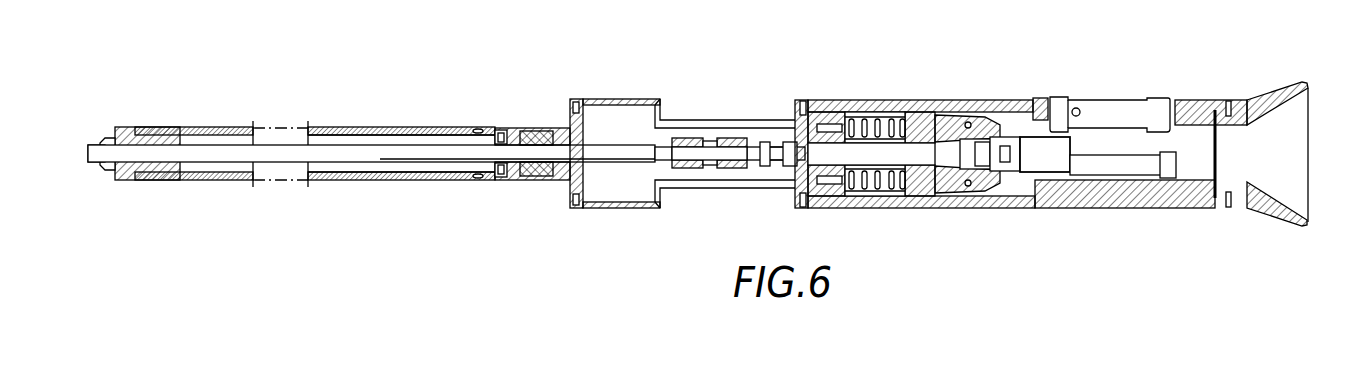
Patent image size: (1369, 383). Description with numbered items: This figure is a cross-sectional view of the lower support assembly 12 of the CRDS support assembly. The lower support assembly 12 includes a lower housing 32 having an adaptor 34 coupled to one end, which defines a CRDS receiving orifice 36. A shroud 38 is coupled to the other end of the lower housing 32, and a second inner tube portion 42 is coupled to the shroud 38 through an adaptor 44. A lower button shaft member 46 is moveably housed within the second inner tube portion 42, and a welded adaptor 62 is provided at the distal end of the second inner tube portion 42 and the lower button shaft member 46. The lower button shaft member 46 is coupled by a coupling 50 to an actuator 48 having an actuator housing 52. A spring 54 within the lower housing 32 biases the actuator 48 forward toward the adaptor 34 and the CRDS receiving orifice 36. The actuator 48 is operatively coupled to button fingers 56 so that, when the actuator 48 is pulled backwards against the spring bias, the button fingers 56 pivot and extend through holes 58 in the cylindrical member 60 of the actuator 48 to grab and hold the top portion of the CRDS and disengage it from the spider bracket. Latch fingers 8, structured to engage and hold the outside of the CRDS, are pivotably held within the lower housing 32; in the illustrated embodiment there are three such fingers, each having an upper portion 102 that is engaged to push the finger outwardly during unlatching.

The lower support assembly 12 is at (707, 137).
The welded adaptor 62 is at (125, 128).
The second inner tube portion 42 is at (228, 127).
The lower button shaft member 46 is at (411, 140).
The adaptor 44 is at (568, 186).
The shroud 38 is at (612, 99).
The coupling 50 is at (718, 170).
The actuator 48 is at (908, 208).
The spring 54 is at (860, 186).
The actuator housing 52 is at (905, 127).
The button fingers 56 is at (975, 118).
The holes 58 is at (1008, 202).
The cylindrical member 60 is at (1054, 99).
The upper portion of latch finger 102 is at (1060, 103).
The latch fingers 8 is at (1130, 108).
The lower housing 32 is at (1133, 208).
The adaptor 34 is at (1263, 183).
The CRDS receiving orifice 36 is at (1303, 194).